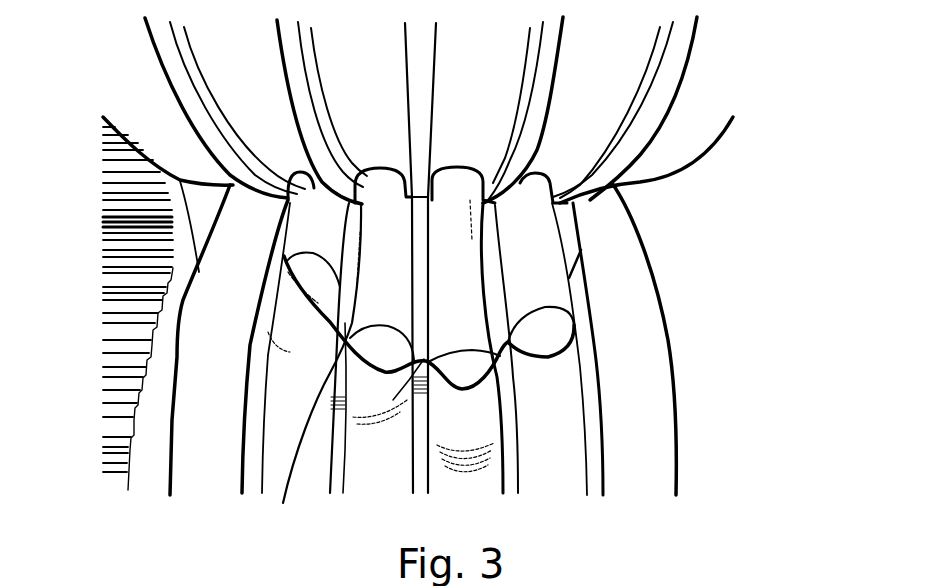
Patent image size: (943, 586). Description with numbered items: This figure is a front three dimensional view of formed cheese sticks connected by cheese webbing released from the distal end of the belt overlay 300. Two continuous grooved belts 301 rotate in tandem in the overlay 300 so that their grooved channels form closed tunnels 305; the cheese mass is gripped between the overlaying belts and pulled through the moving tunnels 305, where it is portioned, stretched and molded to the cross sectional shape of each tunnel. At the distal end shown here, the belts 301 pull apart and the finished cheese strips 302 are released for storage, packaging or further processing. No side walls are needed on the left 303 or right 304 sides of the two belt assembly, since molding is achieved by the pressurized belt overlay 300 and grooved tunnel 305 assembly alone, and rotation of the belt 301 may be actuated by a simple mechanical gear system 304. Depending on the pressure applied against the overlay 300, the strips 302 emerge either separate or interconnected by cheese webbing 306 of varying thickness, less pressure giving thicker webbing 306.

The belt overlay 300 is at (775, 181).
The belt 301 is at (158, 135).
The cheese strips 302 is at (548, 329).
The left side 303 is at (638, 467).
The right side 304 is at (200, 432).
The grooved tunnel 305 is at (460, 167).
The cheese webbing 306 is at (407, 398).